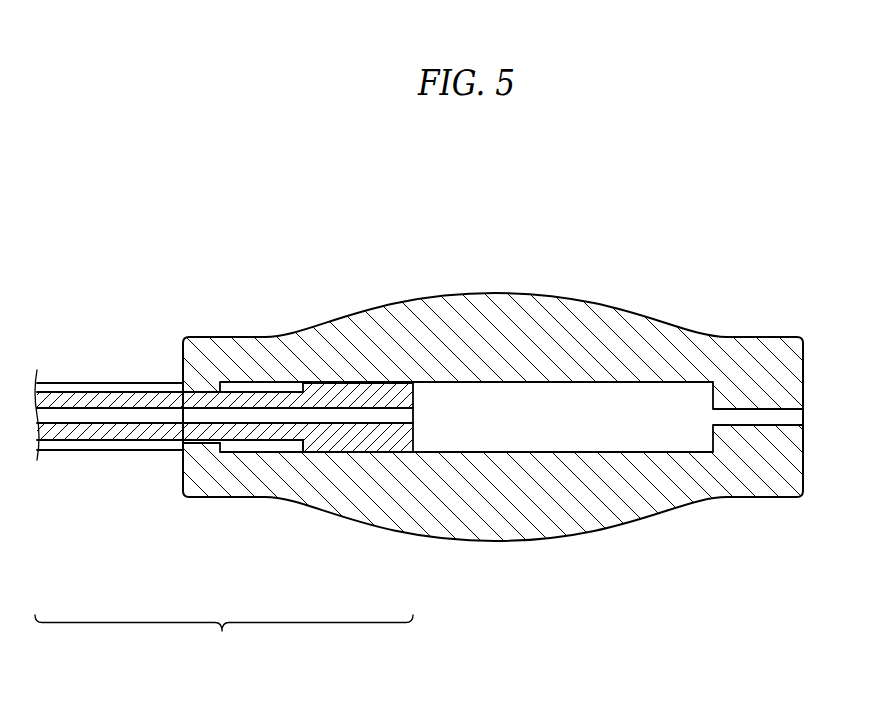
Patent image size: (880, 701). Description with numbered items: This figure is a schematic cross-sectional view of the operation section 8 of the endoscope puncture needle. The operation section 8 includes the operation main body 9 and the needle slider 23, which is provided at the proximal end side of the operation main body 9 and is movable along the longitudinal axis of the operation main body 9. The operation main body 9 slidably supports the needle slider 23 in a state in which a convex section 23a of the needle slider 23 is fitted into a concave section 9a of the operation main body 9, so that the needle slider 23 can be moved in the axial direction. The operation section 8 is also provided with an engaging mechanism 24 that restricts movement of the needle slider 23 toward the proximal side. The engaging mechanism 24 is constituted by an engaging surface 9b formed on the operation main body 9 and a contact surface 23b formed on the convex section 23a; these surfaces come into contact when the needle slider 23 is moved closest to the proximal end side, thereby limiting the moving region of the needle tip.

The operation section 8 is at (215, 246).
The operation main body 9 is at (358, 393).
The concave section 9a is at (105, 450).
The engaging surface 9b is at (282, 447).
The needle slider 23 is at (572, 523).
The convex section 23a is at (192, 393).
The contact surface 23b is at (233, 447).
The engaging mechanism 24 is at (224, 641).